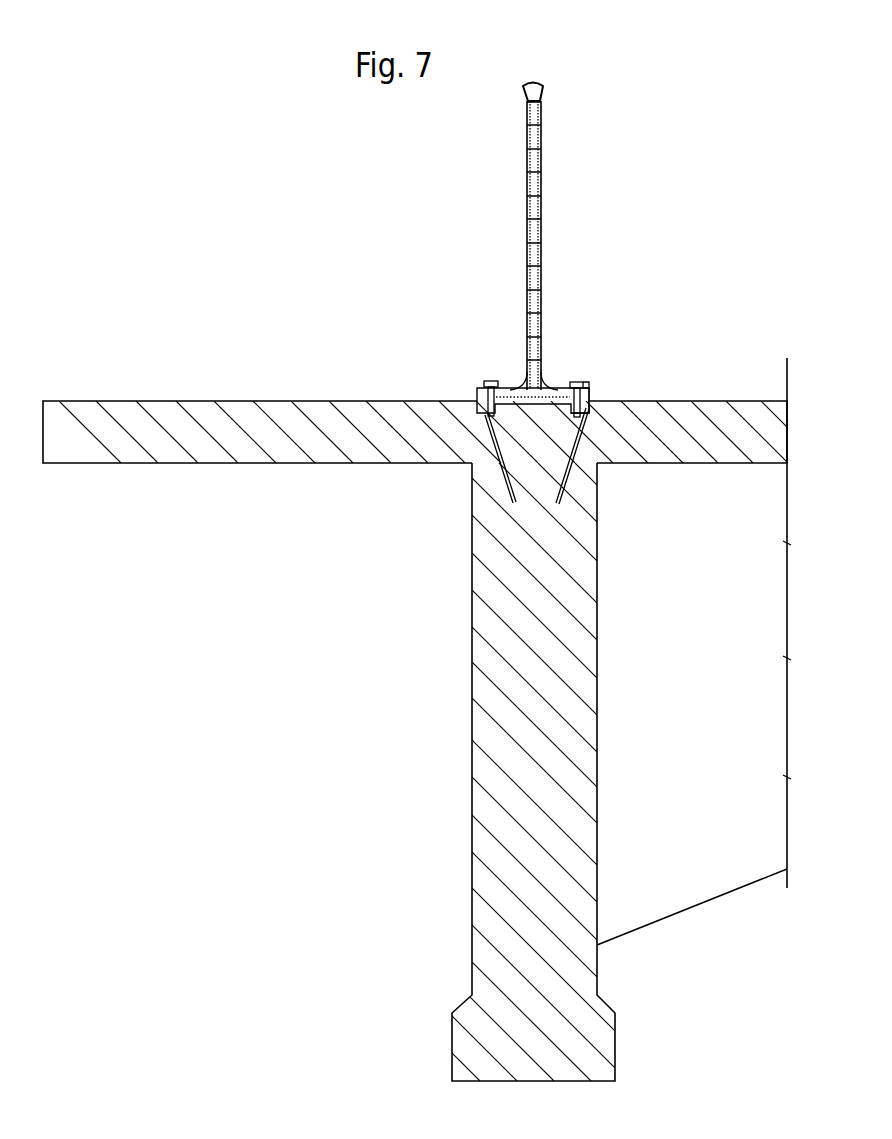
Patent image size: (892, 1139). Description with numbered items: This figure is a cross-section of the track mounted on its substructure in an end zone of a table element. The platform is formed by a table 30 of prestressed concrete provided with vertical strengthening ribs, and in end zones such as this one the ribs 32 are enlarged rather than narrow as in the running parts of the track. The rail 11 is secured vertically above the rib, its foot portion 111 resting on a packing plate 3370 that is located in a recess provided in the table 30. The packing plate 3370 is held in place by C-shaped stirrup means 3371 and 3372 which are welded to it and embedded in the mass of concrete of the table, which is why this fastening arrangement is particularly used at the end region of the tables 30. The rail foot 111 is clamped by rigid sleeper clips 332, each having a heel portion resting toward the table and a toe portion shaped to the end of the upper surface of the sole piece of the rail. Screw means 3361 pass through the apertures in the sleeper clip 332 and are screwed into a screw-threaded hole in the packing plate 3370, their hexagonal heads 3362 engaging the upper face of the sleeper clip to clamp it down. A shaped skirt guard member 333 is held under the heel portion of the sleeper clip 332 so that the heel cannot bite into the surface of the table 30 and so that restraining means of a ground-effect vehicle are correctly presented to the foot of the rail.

The rail 11 is at (529, 211).
The foot portion of the rail 111 is at (518, 384).
The table 30 is at (722, 421).
The enlarged rib 32 is at (570, 745).
The sleeper clip 332 is at (592, 395).
The skirt guard member 333 is at (586, 395).
The screw means 3361 is at (591, 411).
The hexagonal head 3362 is at (573, 378).
The packing plate 3370 is at (519, 410).
The C-shaped stirrup means 3371 is at (491, 446).
The C-shaped stirrup means 3372 is at (580, 448).